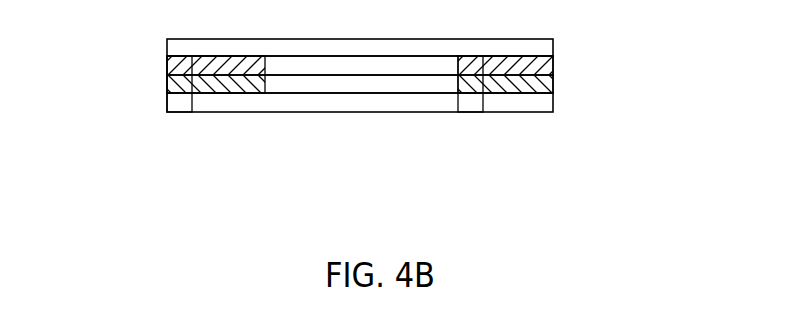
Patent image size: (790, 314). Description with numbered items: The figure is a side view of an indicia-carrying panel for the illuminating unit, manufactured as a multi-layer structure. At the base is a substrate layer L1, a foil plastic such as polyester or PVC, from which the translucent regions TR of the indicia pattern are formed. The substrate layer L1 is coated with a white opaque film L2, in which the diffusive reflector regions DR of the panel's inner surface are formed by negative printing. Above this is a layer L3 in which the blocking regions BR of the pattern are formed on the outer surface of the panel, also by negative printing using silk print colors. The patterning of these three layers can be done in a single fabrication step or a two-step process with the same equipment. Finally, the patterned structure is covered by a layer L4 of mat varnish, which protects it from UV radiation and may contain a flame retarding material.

The substrate layer L1 is at (547, 107).
The white opaque film L2 is at (172, 90).
The blocking layer L3 is at (547, 66).
The mat varnish layer L4 is at (177, 50).
The blocking regions BR is at (192, 56).
The diffusive reflector regions DR is at (225, 87).
The translucent regions TR is at (373, 70).